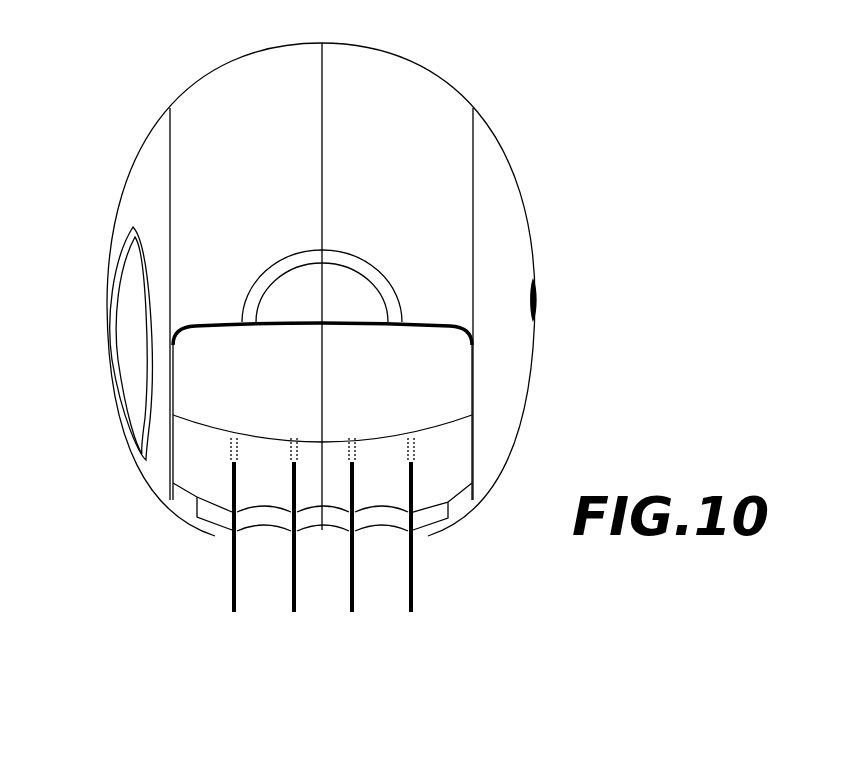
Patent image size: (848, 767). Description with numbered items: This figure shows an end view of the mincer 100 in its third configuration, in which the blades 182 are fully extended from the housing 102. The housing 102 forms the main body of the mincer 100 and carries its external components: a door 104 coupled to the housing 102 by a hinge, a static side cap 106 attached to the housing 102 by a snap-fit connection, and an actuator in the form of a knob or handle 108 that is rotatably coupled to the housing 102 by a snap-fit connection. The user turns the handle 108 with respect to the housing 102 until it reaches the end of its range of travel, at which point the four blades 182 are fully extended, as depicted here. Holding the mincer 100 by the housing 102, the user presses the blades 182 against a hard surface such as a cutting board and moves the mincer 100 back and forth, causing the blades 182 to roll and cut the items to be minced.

The mincer 100 is at (146, 68).
The housing 102 is at (418, 100).
The door 104 is at (195, 394).
The static side cap 106 is at (503, 225).
The handle 108 is at (147, 170).
The blades 182 is at (295, 626).